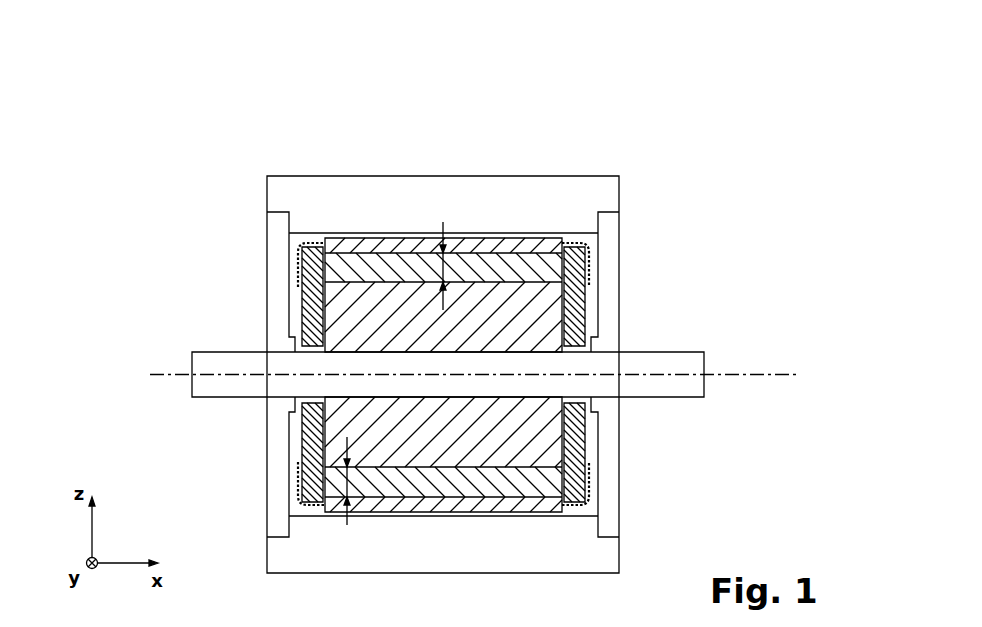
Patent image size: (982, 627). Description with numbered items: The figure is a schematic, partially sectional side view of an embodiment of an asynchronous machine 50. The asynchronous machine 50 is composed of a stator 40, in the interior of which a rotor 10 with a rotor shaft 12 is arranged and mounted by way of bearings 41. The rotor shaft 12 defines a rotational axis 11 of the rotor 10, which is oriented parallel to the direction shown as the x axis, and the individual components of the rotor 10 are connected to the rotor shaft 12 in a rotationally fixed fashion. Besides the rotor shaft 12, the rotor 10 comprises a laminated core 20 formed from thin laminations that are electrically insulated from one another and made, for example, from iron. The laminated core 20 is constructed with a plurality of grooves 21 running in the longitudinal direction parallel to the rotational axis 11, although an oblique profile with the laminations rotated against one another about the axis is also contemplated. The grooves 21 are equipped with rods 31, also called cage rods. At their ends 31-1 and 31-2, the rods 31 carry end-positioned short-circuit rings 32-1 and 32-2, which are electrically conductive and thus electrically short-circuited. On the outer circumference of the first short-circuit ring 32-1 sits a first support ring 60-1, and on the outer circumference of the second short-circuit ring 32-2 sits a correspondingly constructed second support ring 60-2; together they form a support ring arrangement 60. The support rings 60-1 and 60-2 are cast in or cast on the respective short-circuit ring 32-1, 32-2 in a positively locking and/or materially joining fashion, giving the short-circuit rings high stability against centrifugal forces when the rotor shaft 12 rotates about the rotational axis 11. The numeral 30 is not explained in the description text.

The asynchronous machine 50 is at (207, 173).
The stator 40 is at (610, 233).
The bearings 41 is at (610, 405).
The rotor shaft 12 is at (683, 350).
The rotational axis 11 is at (785, 373).
The rotor 30 is at (596, 312).
The rotor 10 is at (352, 233).
The laminated core 20 is at (408, 247).
The grooves 21 is at (318, 487).
The rods 31 is at (545, 483).
The support ring arrangement 60 is at (580, 235).
The first support ring 60-1 is at (303, 503).
The second support ring 60-2 is at (595, 508).
The first end of the rods 31-1 is at (298, 268).
The second end of the rods 31-2 is at (588, 263).
The first short-circuit ring 32-1 is at (298, 285).
The second short-circuit ring 32-2 is at (567, 243).